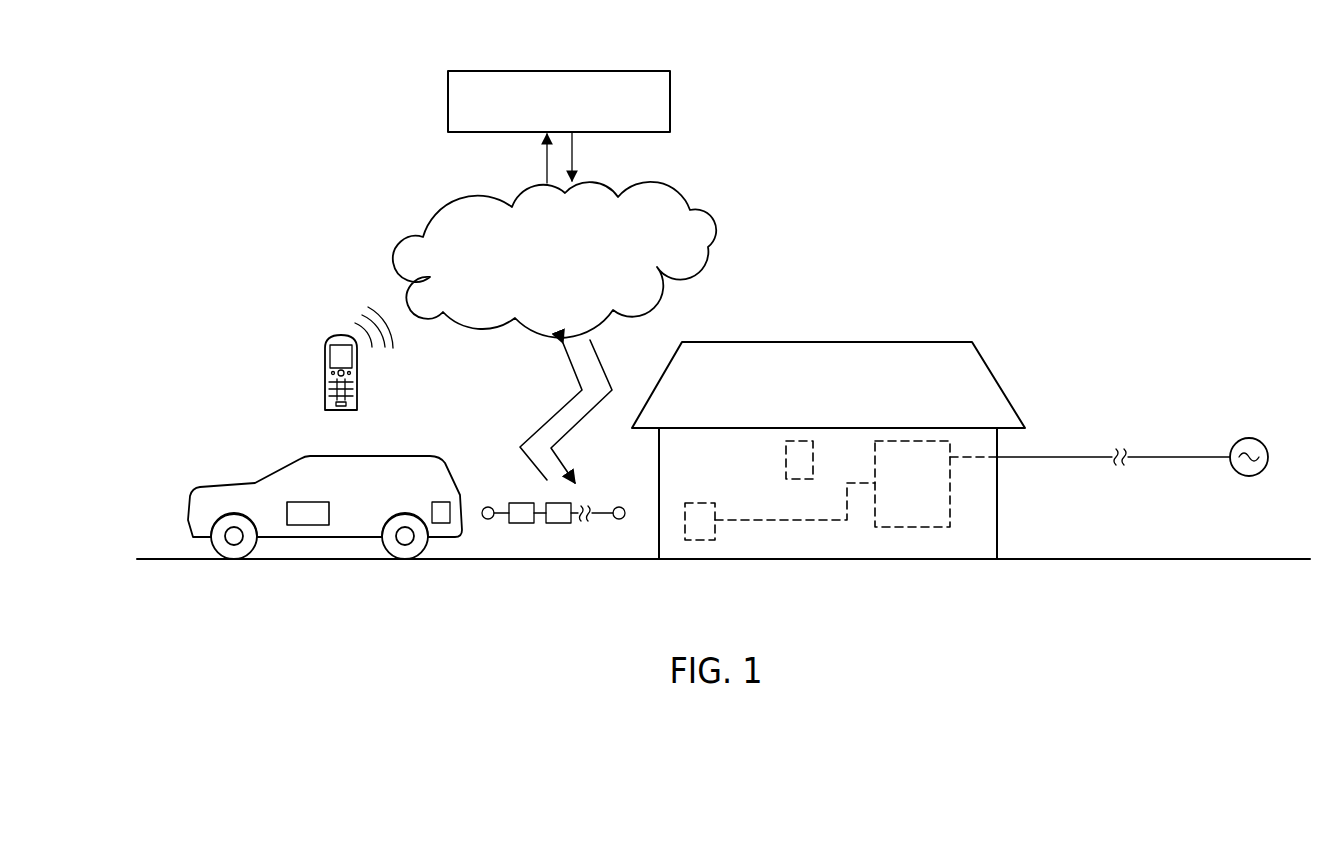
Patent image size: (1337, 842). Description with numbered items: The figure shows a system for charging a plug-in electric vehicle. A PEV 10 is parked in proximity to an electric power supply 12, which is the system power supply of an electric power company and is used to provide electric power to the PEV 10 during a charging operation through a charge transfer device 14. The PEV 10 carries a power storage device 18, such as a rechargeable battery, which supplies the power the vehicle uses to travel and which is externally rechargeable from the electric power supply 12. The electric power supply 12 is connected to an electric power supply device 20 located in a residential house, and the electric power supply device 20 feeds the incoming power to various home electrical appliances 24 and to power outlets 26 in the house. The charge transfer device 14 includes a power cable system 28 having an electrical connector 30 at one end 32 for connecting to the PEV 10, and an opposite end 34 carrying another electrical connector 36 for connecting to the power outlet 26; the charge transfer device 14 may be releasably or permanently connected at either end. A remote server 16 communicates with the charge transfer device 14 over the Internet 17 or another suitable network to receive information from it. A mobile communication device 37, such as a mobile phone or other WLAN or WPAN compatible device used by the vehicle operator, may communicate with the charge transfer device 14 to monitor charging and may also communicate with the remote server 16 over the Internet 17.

The PEV 10 is at (315, 479).
The electric power supply 12 is at (1257, 428).
The charge transfer device 14 is at (505, 570).
The remote server 16 is at (560, 71).
The Internet 17 is at (426, 223).
The power storage device 18 is at (329, 512).
The electric power supply device 20 is at (910, 441).
The home electrical appliances 24 is at (800, 441).
The power outlets 26 is at (701, 503).
The power cable system 28 is at (553, 542).
The electrical connector 30 is at (484, 521).
The end 32 is at (503, 503).
The opposite end 34 is at (607, 503).
The electrical connector 36 is at (623, 521).
The mobile communication device 37 is at (305, 362).